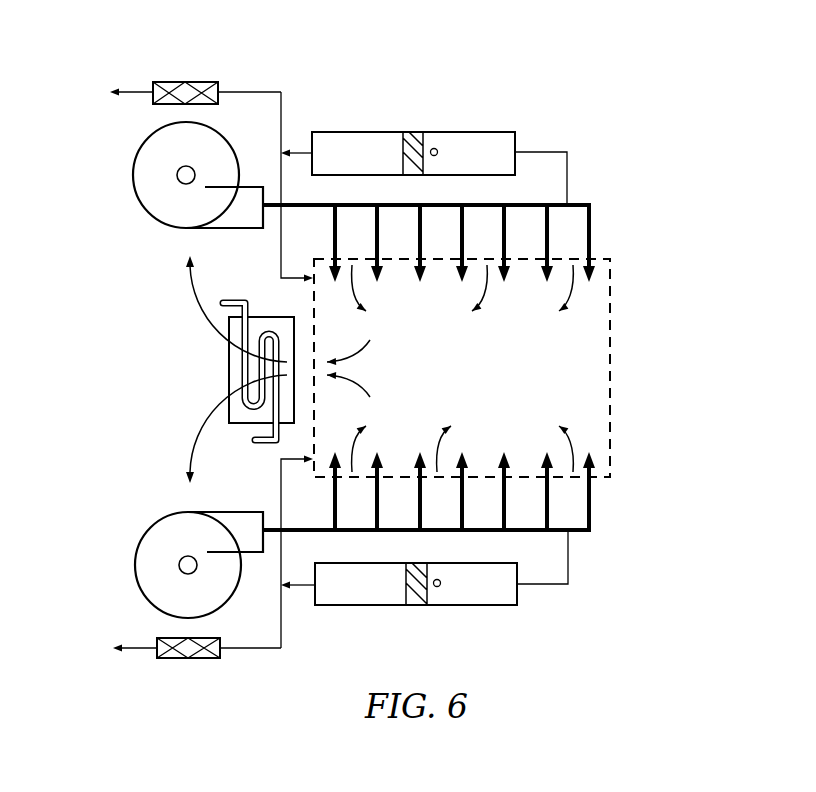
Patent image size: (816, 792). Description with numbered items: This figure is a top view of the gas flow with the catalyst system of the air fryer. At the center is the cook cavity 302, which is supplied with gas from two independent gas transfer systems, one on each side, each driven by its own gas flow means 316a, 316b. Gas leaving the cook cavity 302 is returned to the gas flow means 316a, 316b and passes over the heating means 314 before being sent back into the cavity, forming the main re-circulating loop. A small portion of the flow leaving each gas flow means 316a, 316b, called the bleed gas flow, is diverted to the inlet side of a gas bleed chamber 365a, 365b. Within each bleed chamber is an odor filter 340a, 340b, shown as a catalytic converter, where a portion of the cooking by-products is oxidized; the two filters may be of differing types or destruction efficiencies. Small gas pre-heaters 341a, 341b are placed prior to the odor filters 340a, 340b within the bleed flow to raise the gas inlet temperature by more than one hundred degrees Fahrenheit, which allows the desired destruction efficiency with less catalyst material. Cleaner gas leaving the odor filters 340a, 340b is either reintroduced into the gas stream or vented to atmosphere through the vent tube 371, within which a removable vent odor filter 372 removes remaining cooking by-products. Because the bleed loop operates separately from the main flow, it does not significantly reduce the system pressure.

The cook cavity 302 is at (612, 373).
The heating means 314 is at (229, 377).
The gas flow means 316a is at (135, 566).
The gas flow means 316b is at (133, 174).
The odor filter 340a is at (418, 603).
The odor filter 340b is at (414, 134).
The gas pre-heater 341a is at (441, 585).
The gas pre-heater 341b is at (438, 151).
The gas bleed chamber 365a is at (341, 615).
The gas bleed chamber 365b is at (338, 122).
The vent tube 371 is at (181, 74).
The vent odor filter 372 is at (206, 90).